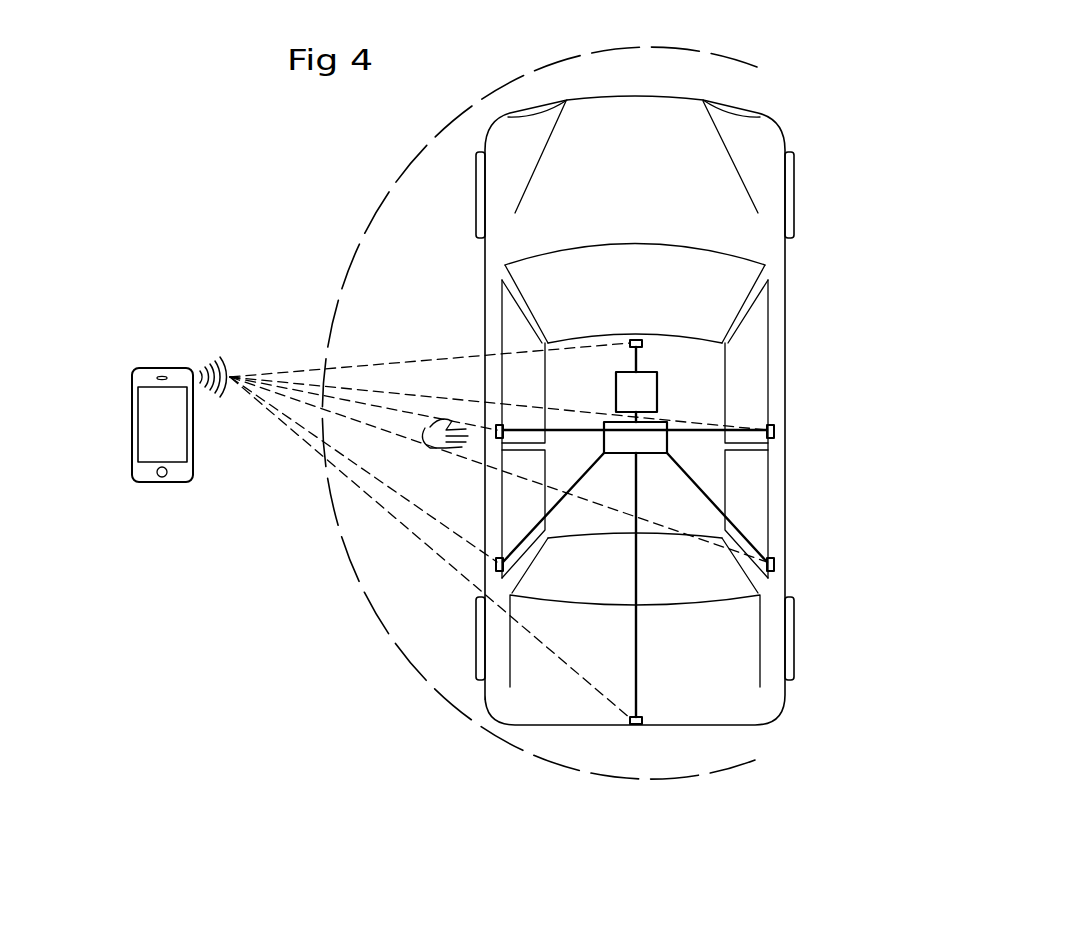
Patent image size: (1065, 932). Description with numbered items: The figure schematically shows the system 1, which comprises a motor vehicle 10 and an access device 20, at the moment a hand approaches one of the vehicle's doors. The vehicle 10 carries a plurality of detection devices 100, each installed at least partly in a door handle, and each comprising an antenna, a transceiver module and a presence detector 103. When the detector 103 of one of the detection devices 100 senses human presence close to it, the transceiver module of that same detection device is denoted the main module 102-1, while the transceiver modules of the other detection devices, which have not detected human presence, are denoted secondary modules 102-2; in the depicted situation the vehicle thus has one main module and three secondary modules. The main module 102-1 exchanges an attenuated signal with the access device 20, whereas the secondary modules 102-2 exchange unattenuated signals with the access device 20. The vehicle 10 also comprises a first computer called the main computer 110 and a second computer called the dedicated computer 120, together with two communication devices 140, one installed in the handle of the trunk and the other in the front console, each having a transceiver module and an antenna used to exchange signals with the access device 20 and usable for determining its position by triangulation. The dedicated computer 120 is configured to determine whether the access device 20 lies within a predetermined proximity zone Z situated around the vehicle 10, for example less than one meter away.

The system 1 is at (215, 182).
The motor vehicle 10 is at (808, 112).
The access device 20 is at (145, 408).
The detection device 100 is at (495, 565).
The main module 102-1 is at (495, 430).
The secondary module 102-2 is at (775, 430).
The presence detector 103 is at (500, 425).
The main computer 110 is at (658, 390).
The dedicated computer 120 is at (667, 440).
The communication device 140 is at (641, 340).
The proximity zone Z is at (360, 605).